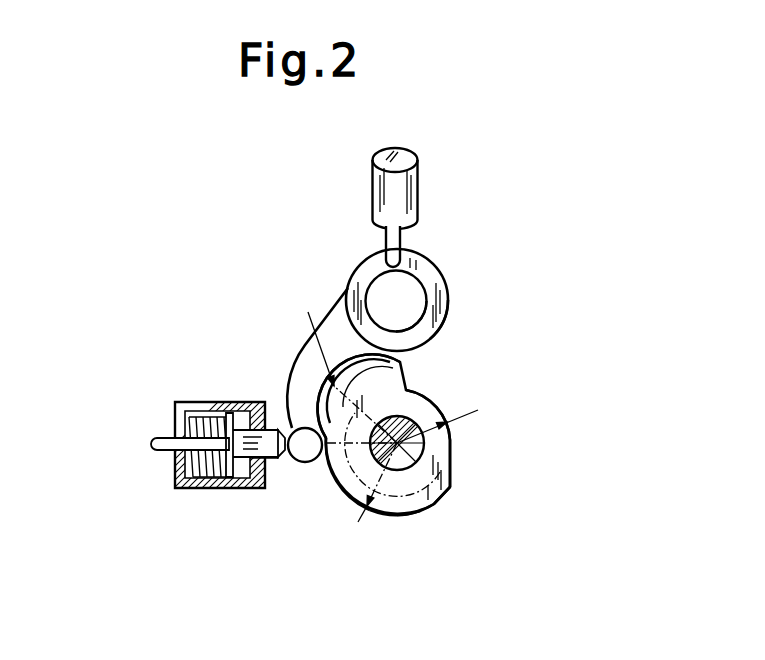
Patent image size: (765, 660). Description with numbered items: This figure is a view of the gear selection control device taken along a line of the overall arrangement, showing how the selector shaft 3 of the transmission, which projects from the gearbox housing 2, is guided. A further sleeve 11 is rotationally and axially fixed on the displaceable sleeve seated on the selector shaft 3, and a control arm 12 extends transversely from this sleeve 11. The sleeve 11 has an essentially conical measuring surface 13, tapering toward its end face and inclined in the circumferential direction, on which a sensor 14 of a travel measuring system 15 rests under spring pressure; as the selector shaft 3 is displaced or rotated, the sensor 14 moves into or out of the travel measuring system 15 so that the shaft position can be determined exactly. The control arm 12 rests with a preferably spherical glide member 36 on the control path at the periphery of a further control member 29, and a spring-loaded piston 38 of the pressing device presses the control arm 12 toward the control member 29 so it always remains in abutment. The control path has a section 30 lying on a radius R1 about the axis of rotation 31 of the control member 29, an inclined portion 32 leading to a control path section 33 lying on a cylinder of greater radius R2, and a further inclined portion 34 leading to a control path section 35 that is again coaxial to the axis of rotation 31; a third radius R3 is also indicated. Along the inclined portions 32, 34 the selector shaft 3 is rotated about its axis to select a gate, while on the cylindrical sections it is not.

The gearbox housing 2 is at (414, 422).
The selector shaft 3 is at (402, 285).
The sleeve 11 is at (372, 273).
The control arm 12 is at (310, 360).
The measuring surface 13 is at (447, 293).
The sensor 14 is at (400, 238).
The travel measuring system 15 is at (388, 183).
The control member 29 is at (408, 498).
The control path section 30 is at (427, 397).
The axis of rotation 31 is at (397, 443).
The inclined portion 32 is at (453, 455).
The control path section 33 is at (390, 513).
The inclined portion 34 is at (328, 445).
The control path section 35 is at (337, 397).
The glide member 36 is at (300, 452).
The spring-loaded piston 38 is at (222, 488).
The radius R1 is at (453, 418).
The radius R2 is at (364, 497).
The radius R3 is at (343, 363).